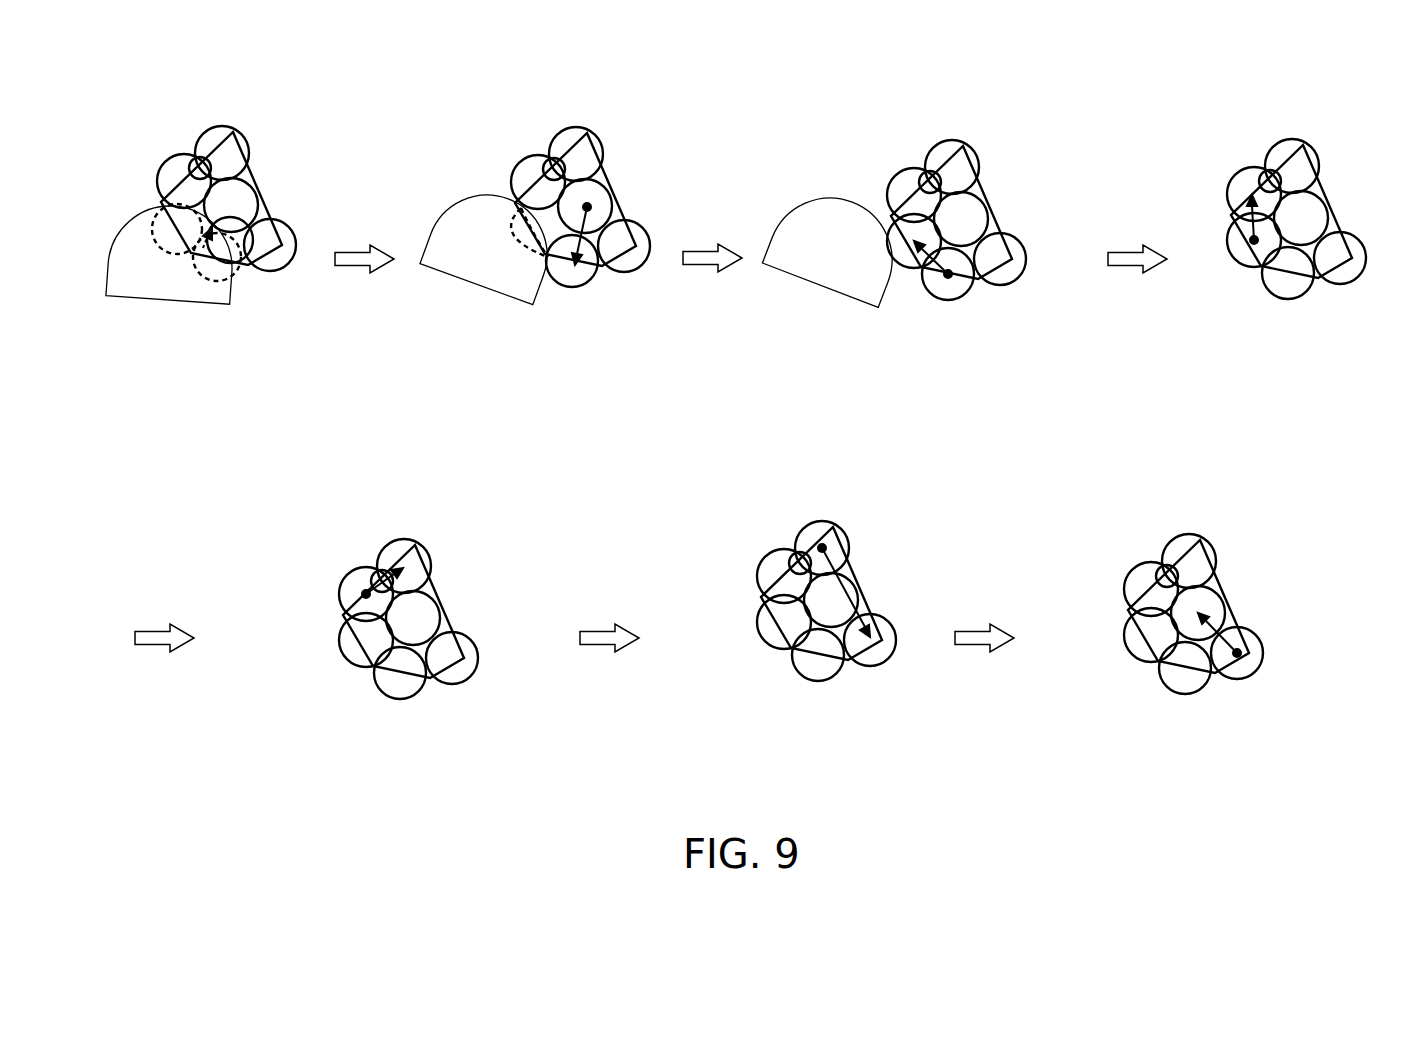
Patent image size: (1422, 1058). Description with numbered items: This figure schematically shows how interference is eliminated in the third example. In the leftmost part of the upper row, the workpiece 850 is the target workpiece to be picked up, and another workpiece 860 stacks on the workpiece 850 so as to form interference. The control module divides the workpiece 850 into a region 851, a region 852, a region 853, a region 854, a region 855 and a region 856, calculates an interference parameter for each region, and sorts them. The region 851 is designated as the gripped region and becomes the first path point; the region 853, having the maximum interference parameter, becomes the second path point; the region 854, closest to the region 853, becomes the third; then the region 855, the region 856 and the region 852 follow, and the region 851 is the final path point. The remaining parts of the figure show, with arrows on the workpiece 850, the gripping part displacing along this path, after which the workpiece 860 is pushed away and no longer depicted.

The workpiece 850 is at (247, 177).
The region 851 is at (247, 204).
The region 852 is at (277, 262).
The region 853 is at (240, 272).
The region 854 is at (163, 205).
The region 855 is at (163, 172).
The region 856 is at (211, 134).
The workpiece 860 is at (165, 303).